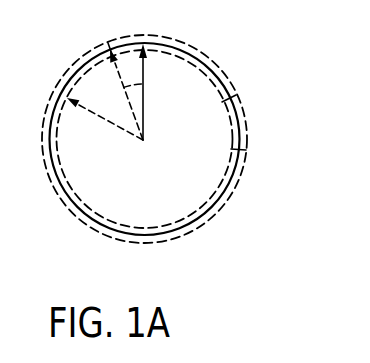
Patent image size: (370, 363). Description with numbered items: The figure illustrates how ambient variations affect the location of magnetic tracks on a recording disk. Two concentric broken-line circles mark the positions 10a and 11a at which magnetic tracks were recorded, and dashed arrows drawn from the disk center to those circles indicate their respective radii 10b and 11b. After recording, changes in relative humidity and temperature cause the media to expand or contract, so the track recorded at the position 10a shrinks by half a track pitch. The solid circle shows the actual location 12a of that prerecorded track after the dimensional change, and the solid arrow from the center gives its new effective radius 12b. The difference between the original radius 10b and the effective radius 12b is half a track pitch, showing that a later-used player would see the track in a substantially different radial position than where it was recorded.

The recorded track position 10a is at (222, 68).
The actual location of prerecorded track 12a is at (232, 98).
The recorded track position 11a is at (247, 150).
The radius 10b is at (146, 91).
The effective radius 12b is at (143, 100).
The radius 11b is at (86, 112).